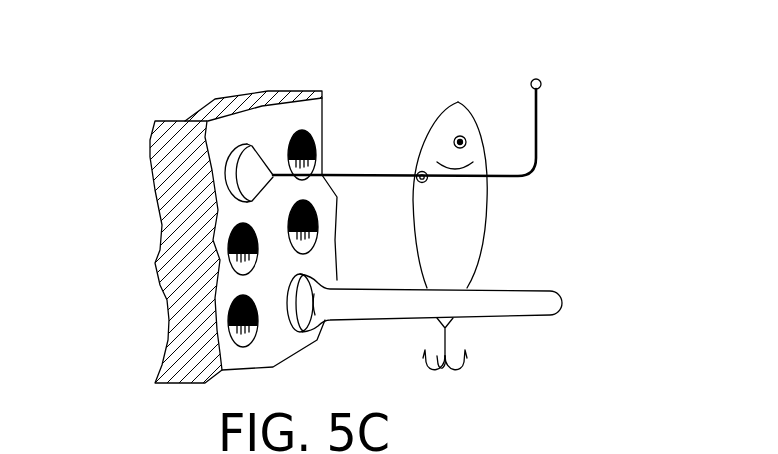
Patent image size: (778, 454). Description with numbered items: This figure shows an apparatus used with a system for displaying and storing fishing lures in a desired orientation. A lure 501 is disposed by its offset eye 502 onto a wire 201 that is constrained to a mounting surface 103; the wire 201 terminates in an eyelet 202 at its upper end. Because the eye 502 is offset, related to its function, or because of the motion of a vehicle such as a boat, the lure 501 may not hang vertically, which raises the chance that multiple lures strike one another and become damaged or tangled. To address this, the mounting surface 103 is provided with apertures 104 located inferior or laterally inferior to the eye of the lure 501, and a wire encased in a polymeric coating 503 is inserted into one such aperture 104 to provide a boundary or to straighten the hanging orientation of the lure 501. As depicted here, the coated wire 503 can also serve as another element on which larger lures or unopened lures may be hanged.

The mounting surface 103 is at (303, 113).
The aperture 104 is at (318, 144).
The wire 201 is at (536, 133).
The wire eye 202 is at (540, 81).
The lure 501 is at (502, 240).
The offset eye 502 is at (252, 166).
The polymeric coating 503 is at (493, 307).